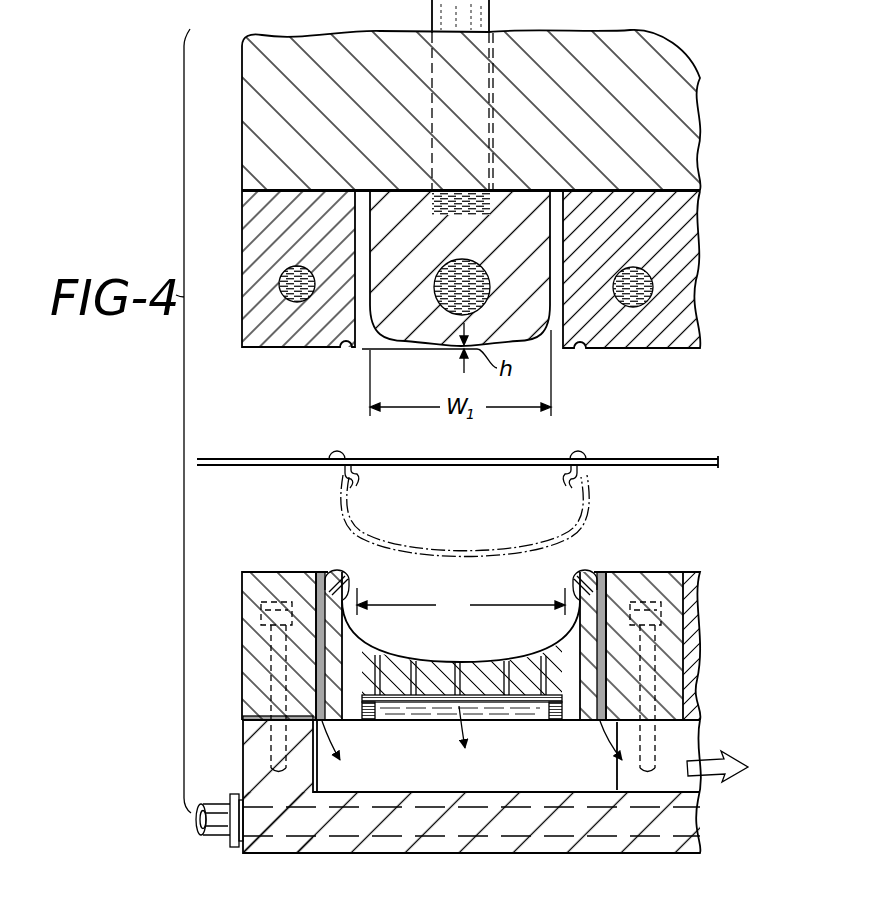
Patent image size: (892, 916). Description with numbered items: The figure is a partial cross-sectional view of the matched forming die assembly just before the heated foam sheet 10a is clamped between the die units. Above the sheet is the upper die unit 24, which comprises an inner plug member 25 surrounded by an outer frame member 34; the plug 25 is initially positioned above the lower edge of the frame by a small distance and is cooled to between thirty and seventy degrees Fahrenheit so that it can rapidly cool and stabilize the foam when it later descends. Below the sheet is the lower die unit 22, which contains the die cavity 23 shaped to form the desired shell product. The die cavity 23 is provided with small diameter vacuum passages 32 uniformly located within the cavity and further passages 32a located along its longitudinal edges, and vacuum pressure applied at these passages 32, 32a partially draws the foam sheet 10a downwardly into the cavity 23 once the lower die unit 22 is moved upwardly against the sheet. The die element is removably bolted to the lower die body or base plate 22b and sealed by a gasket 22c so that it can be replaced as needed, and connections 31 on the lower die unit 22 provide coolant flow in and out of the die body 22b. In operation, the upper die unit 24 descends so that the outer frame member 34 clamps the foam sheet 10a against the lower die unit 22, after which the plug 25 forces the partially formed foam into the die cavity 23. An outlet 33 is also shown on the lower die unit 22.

The upper die unit 24 is at (705, 132).
The outer frame member 34 is at (510, 294).
The plug member 25 is at (540, 328).
The foam sheet 10a is at (655, 458).
The lower die unit 22 is at (510, 675).
The die cavity 23 is at (355, 652).
The gasket 22c is at (252, 720).
The vacuum passages 32 is at (378, 700).
The edge passages 32a is at (325, 730).
The air outlet 33 is at (693, 745).
The connections 31 is at (212, 838).
The die body 22b is at (480, 813).